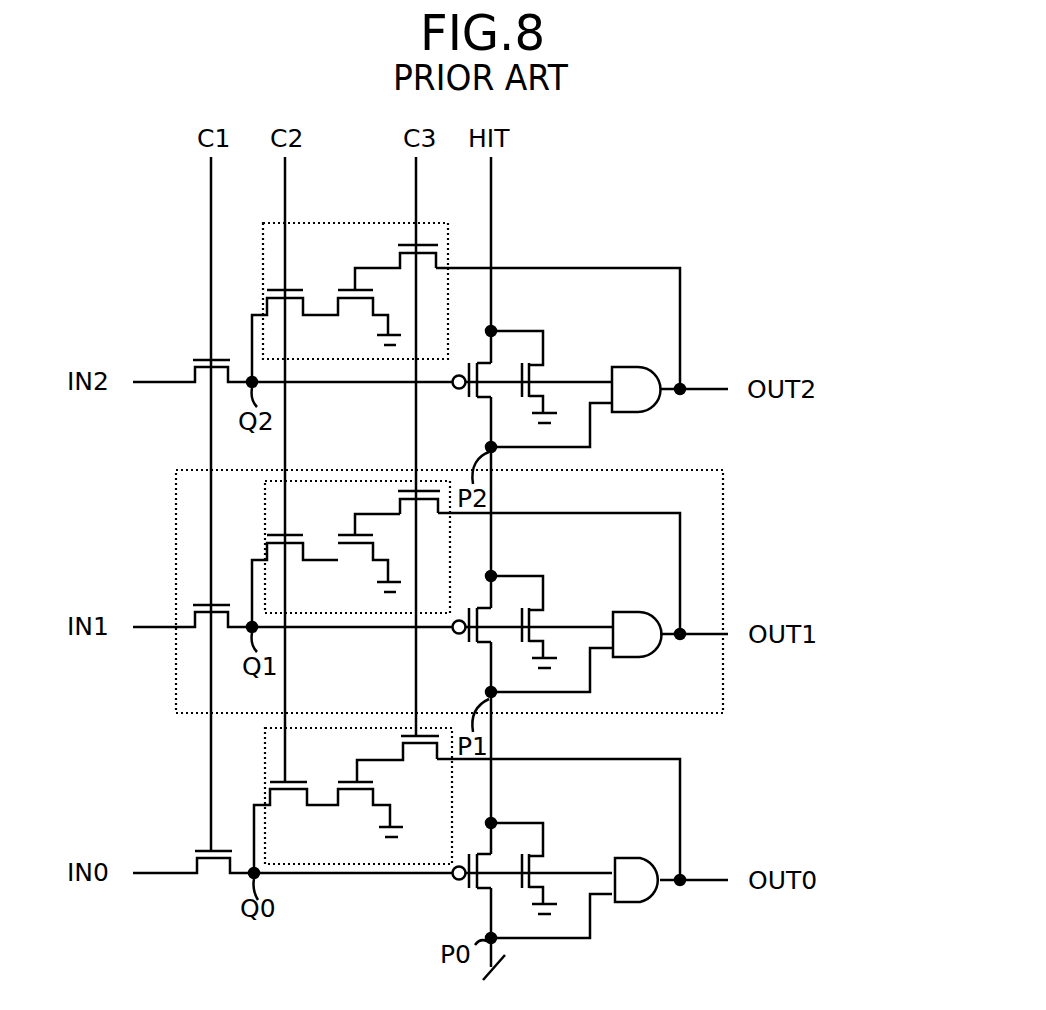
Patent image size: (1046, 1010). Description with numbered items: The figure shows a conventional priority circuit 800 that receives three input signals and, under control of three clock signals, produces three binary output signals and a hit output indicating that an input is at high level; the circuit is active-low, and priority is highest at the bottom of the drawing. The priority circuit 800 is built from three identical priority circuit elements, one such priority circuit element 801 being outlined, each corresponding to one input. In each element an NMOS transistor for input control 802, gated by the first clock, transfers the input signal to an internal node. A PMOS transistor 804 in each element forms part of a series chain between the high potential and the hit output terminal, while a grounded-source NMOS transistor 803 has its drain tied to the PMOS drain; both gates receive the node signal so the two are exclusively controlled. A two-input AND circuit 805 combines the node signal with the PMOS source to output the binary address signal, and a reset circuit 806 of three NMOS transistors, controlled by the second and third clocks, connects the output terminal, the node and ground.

The priority circuit 800 is at (784, 155).
The priority circuit element 801 is at (726, 524).
The NMOS transistors for input control 802 is at (189, 593).
The NMOS transistors 803 is at (551, 618).
The PMOS transistors 804 is at (456, 651).
The two-input AND circuits 805 is at (667, 658).
The reset circuits 806 is at (273, 586).